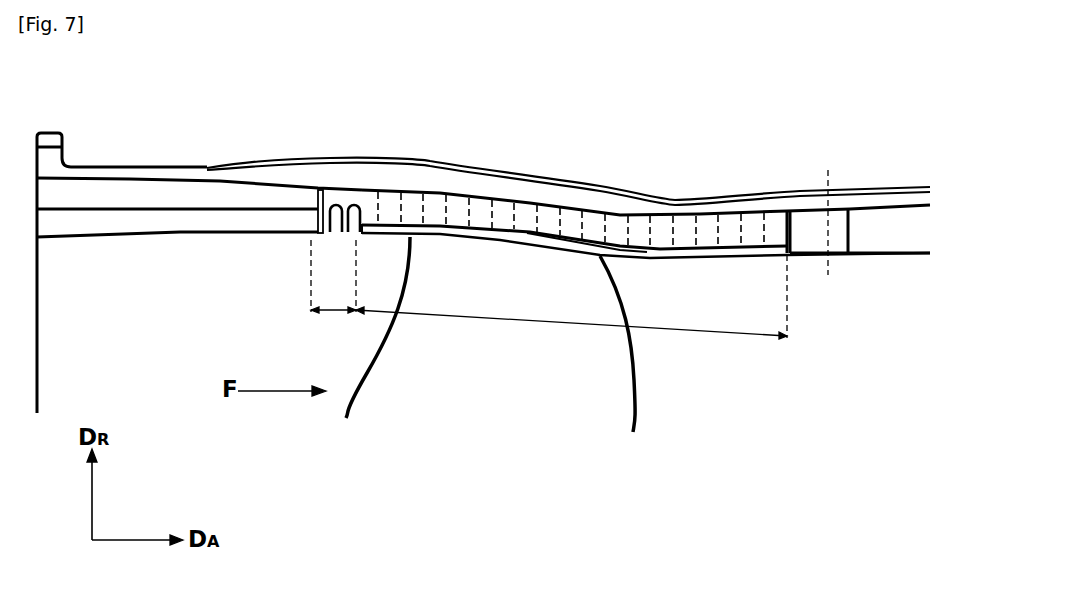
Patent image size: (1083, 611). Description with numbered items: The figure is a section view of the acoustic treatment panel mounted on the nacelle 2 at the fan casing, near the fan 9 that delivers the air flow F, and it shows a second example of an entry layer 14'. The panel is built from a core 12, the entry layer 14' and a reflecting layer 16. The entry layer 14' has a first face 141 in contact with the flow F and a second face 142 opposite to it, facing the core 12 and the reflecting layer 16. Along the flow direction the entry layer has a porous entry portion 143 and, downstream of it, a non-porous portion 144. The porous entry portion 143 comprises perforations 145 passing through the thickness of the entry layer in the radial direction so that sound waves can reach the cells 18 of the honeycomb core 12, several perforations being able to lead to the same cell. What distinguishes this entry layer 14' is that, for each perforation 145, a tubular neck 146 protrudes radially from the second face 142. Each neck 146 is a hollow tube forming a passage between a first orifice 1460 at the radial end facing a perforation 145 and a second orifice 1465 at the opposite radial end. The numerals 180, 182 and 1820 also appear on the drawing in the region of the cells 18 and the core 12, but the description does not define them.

The nacelle 2 is at (240, 173).
The fan 9 is at (612, 405).
The core 12 is at (791, 230).
The entry layer 14' is at (657, 271).
The first face 141 is at (687, 260).
The second face 142 is at (657, 215).
The porous entry portion 143 is at (320, 312).
The non-porous portion 144 is at (542, 321).
The perforations 145 is at (350, 244).
The tubular necks 146 is at (349, 174).
The second orifice 1465 is at (330, 205).
The first orifice 1460 is at (364, 212).
The reflecting layer 16 is at (646, 186).
The cells 18 is at (590, 184).
The cells of abradable material 180 is at (597, 207).
The downstream cells 182 is at (725, 225).
The downstream end of abradable 1820 is at (768, 227).